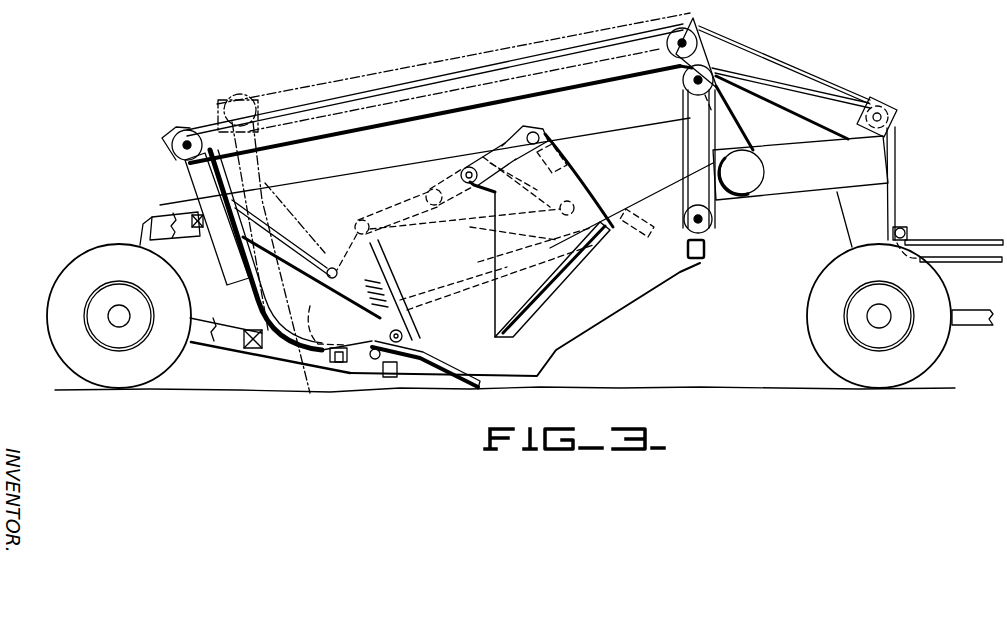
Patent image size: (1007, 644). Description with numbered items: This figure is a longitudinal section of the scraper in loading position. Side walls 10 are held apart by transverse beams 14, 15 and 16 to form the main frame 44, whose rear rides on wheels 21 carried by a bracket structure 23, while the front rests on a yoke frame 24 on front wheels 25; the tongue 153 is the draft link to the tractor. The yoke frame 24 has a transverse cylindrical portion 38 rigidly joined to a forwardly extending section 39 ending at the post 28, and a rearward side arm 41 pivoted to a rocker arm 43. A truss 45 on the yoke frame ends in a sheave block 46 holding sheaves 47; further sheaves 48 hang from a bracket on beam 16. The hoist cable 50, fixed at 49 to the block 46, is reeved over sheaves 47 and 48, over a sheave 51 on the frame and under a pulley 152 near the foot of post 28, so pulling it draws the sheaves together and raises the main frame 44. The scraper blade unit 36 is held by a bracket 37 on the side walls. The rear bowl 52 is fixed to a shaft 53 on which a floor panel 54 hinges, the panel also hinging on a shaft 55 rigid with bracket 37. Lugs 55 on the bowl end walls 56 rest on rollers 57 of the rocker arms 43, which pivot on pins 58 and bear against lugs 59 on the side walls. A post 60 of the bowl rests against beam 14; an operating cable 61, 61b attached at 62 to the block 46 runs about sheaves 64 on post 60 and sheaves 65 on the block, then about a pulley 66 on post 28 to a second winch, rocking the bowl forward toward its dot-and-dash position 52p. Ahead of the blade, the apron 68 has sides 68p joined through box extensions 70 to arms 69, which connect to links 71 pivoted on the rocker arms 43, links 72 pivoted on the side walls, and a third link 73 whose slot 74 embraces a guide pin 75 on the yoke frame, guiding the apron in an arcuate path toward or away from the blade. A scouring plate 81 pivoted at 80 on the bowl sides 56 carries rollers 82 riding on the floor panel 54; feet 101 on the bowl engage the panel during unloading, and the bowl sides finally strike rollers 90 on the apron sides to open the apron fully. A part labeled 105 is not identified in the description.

The side wall 10 is at (383, 176).
The transverse beam 14 is at (187, 203).
The transverse beam 15 is at (249, 350).
The transverse beam 16 is at (693, 260).
The rear wheels 21 is at (55, 299).
The bracket structure 23 is at (168, 250).
The yoke frame 24 is at (779, 197).
The front wheels 25 is at (818, 338).
The post 28 is at (858, 230).
The scraper blade unit 36 is at (464, 372).
The bracket 37 is at (452, 375).
The cylindrical portion 38 is at (764, 172).
The forwardly extending section 39 is at (826, 199).
The side arm 41 is at (591, 250).
The rocker arm 43 is at (360, 219).
The main frame 44 is at (423, 160).
The truss 45 is at (799, 112).
The sheave block 46 is at (678, 78).
The sheaves 47 is at (692, 90).
The second series of sheaves 48 is at (708, 227).
The cable attachment point 49 is at (716, 113).
The hoist cable 50 is at (796, 72).
The sheave 51 is at (893, 105).
The rear bowl 52 is at (302, 355).
The intermediate bowl position 52p is at (247, 97).
The shaft 53 is at (373, 360).
The floor panel 54 is at (425, 346).
The second shaft and lugs 55 is at (392, 378).
The end walls 56 is at (296, 262).
The rollers 57 is at (300, 393).
The pivot pins 58 is at (418, 301).
The lugs 59 is at (337, 363).
The post 60 is at (192, 180).
The operating cable 61 is at (598, 36).
The operating cable 61b is at (994, 262).
The cable attachment point 62 is at (711, 64).
The sheaves 64 is at (190, 134).
The sheaves 65 is at (685, 27).
The pulley 66 is at (907, 236).
The apron 68 is at (578, 280).
The apron sides 68p is at (493, 258).
The arms 69 is at (531, 129).
The box extensions 70 is at (562, 147).
The links 71 is at (465, 228).
The links 72 is at (434, 189).
The third link 73 is at (601, 203).
The elongated slot 74 is at (644, 226).
The guide pin 75 is at (628, 212).
The pivots 80 is at (338, 273).
The scouring plate 81 is at (386, 281).
The rollers 82 is at (402, 336).
The rollers 90 is at (469, 166).
The feet 101 is at (405, 300).
The hook 105 is at (388, 350).
The pulley 152 is at (902, 228).
The tongue 153 is at (963, 325).